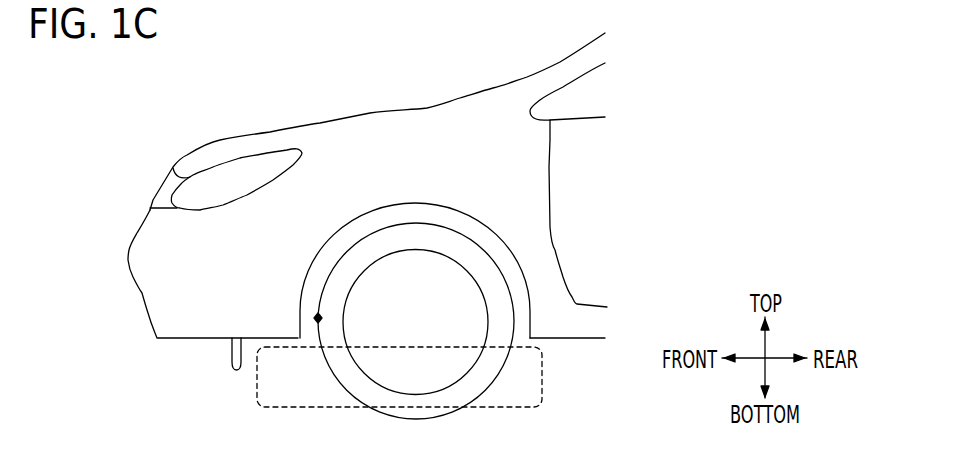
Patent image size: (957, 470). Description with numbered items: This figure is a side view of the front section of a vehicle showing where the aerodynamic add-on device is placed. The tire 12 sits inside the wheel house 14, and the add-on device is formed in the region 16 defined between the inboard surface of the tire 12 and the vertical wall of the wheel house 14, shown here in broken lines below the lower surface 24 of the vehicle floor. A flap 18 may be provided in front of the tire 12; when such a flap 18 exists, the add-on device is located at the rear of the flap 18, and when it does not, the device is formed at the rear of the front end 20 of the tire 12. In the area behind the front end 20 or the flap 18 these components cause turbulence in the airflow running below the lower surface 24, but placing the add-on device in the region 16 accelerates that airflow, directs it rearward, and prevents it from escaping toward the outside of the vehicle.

The tire 12 is at (448, 230).
The wheel house 14 is at (392, 203).
The region 16 is at (520, 407).
The flap 18 is at (235, 370).
The front end 20 is at (318, 320).
The lower surface 24 is at (598, 340).